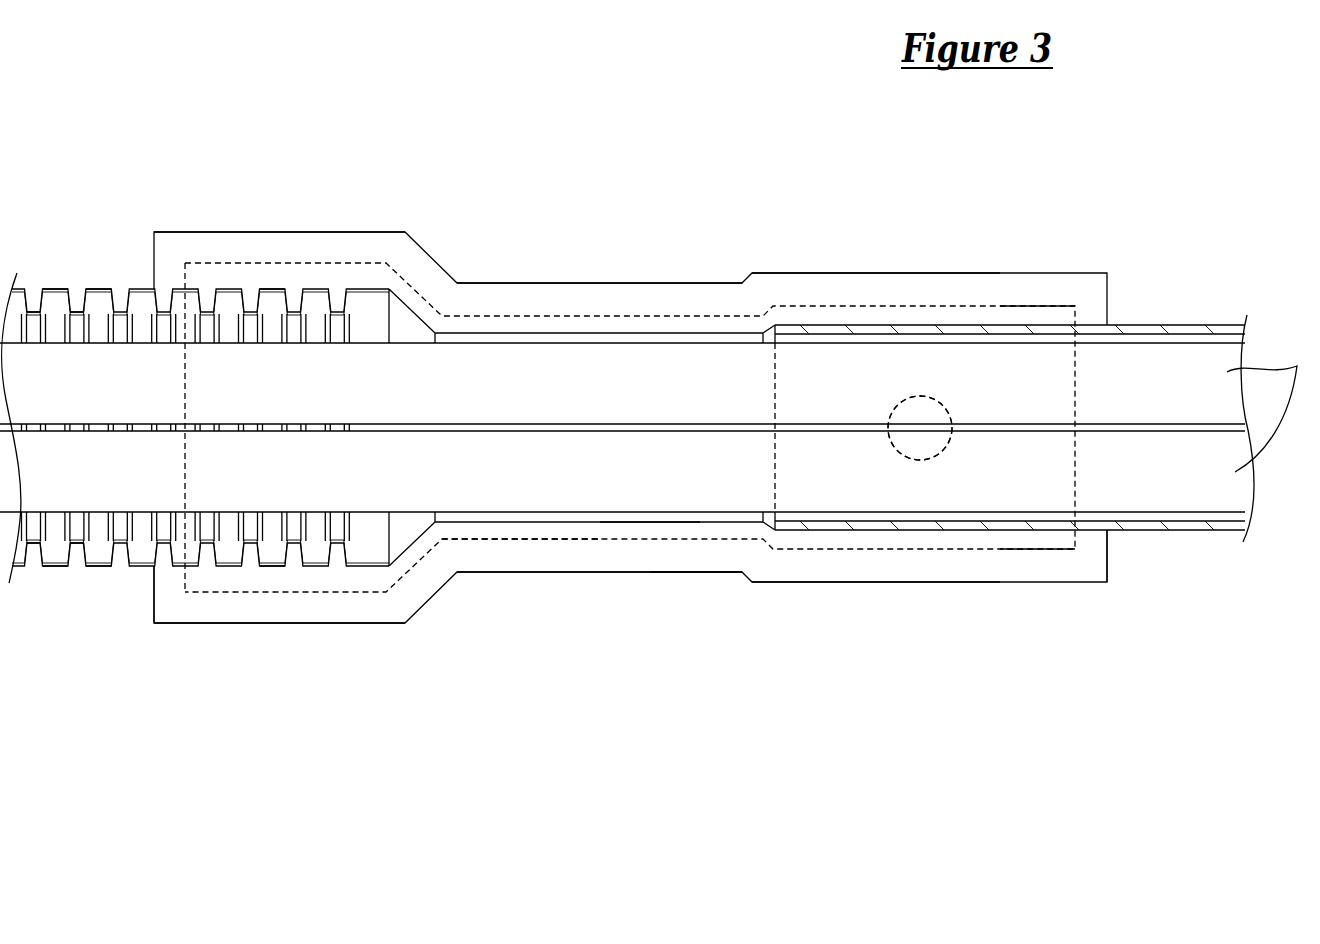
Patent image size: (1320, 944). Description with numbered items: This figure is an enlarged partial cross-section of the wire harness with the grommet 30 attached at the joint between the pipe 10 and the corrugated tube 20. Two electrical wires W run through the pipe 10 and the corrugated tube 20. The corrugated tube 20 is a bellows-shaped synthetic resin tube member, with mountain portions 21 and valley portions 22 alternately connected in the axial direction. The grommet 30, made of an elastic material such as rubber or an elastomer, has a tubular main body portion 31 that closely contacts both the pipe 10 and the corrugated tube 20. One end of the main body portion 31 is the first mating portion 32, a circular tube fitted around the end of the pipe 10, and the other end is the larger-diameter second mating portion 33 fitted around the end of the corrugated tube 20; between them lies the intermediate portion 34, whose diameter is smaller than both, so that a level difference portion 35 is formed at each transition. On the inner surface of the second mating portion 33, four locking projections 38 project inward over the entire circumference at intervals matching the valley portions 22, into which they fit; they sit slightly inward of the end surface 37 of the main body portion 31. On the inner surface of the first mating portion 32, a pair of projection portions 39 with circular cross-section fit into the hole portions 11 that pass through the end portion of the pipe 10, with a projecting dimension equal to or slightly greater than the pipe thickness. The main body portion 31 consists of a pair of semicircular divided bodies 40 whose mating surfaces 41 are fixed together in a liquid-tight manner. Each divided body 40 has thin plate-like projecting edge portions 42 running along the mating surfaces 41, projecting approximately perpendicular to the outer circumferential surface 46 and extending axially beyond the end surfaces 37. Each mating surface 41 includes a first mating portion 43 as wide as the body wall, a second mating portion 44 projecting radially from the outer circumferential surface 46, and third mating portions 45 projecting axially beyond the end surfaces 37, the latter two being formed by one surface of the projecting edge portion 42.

The pipe 10 is at (1193, 330).
The hole portions 11 is at (947, 442).
The corrugated tube 20 is at (56, 300).
The mountain portions 21 is at (98, 553).
The valley portions 22 is at (33, 545).
The grommet 30 is at (616, 297).
The main body portion 31 is at (673, 303).
The first mating portion 32 is at (1043, 312).
The second mating portion 33 is at (230, 273).
The intermediate portion 34 is at (563, 323).
The level difference portion 35 is at (412, 525).
The end surface 37 is at (178, 371).
The locking projections 38 is at (297, 305).
The projection portions 39 is at (912, 445).
The divided bodies 40 is at (788, 292).
The mating surfaces 41 is at (856, 292).
The projecting edge portions 42 is at (510, 297).
The first mating portion 43 is at (625, 530).
The second mating portion 44 is at (693, 560).
The third mating portions 45 is at (165, 590).
The outer circumferential surface 46 is at (563, 540).
The electrical wires W is at (1272, 403).